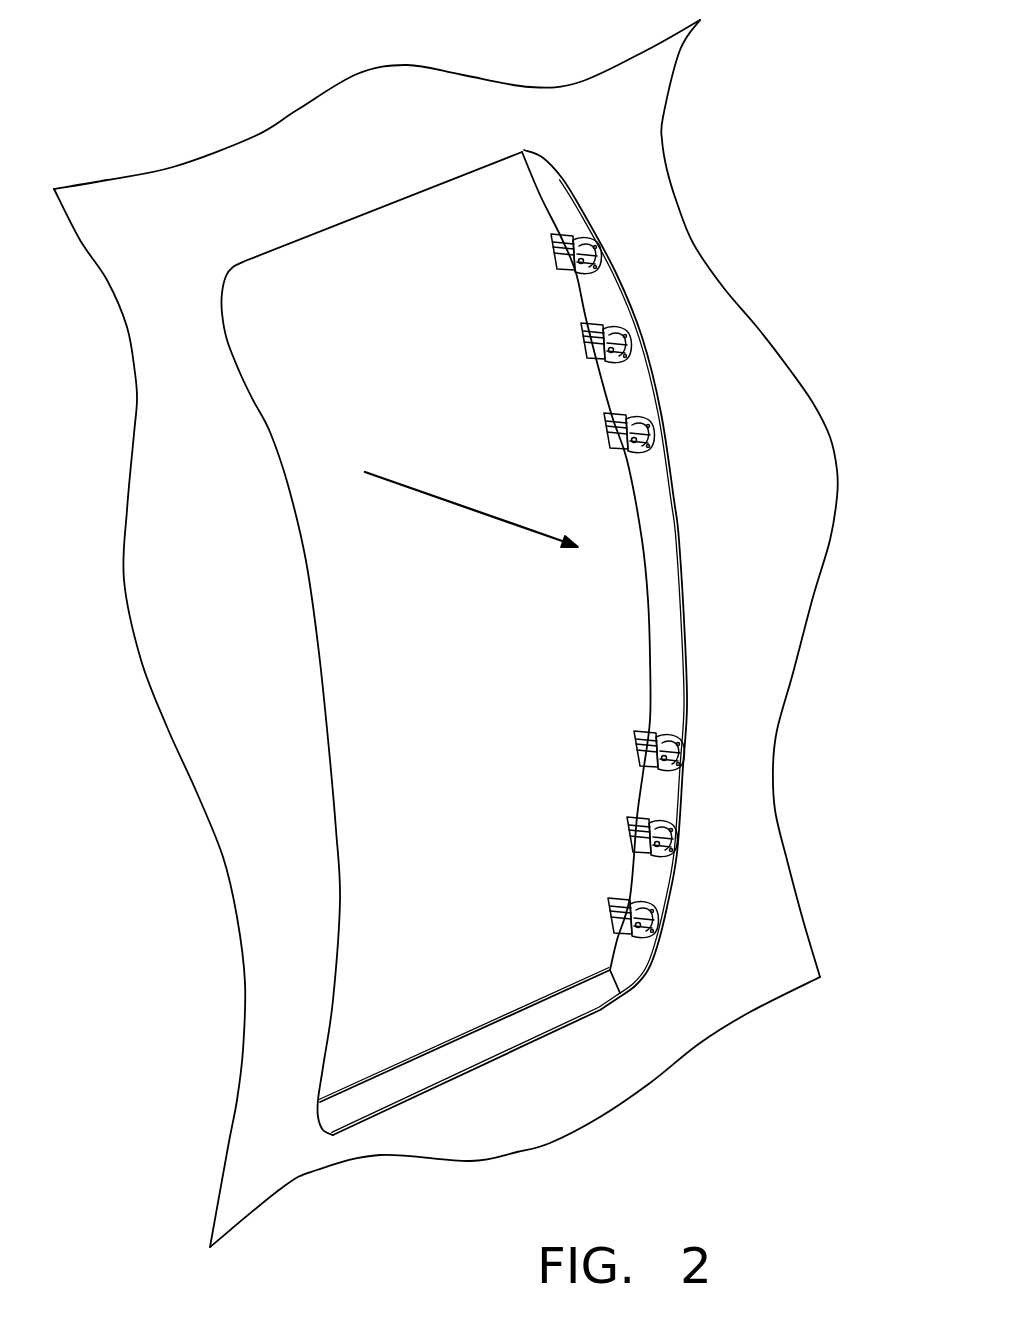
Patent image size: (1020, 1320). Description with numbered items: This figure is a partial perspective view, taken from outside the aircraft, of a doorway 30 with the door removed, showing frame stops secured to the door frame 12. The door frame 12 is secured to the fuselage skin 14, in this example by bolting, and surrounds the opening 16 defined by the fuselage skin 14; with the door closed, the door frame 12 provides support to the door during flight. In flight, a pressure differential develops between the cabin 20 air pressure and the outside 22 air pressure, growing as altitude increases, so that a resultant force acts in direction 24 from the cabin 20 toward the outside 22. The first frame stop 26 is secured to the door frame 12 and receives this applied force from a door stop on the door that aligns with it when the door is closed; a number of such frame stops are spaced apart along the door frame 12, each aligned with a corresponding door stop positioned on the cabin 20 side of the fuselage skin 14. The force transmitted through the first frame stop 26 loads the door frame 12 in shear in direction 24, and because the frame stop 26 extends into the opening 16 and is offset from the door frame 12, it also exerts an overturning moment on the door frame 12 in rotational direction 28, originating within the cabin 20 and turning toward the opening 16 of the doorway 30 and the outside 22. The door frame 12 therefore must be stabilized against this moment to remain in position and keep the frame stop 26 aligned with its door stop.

The door frame 12 is at (658, 521).
The fuselage skin 14 is at (217, 712).
The opening 16 is at (258, 296).
The cabin 20 is at (514, 430).
The outside 22 is at (231, 578).
The direction 24 is at (467, 508).
The first frame stop 26 is at (611, 257).
The rotational direction 28 is at (568, 293).
The doorway 30 is at (556, 655).